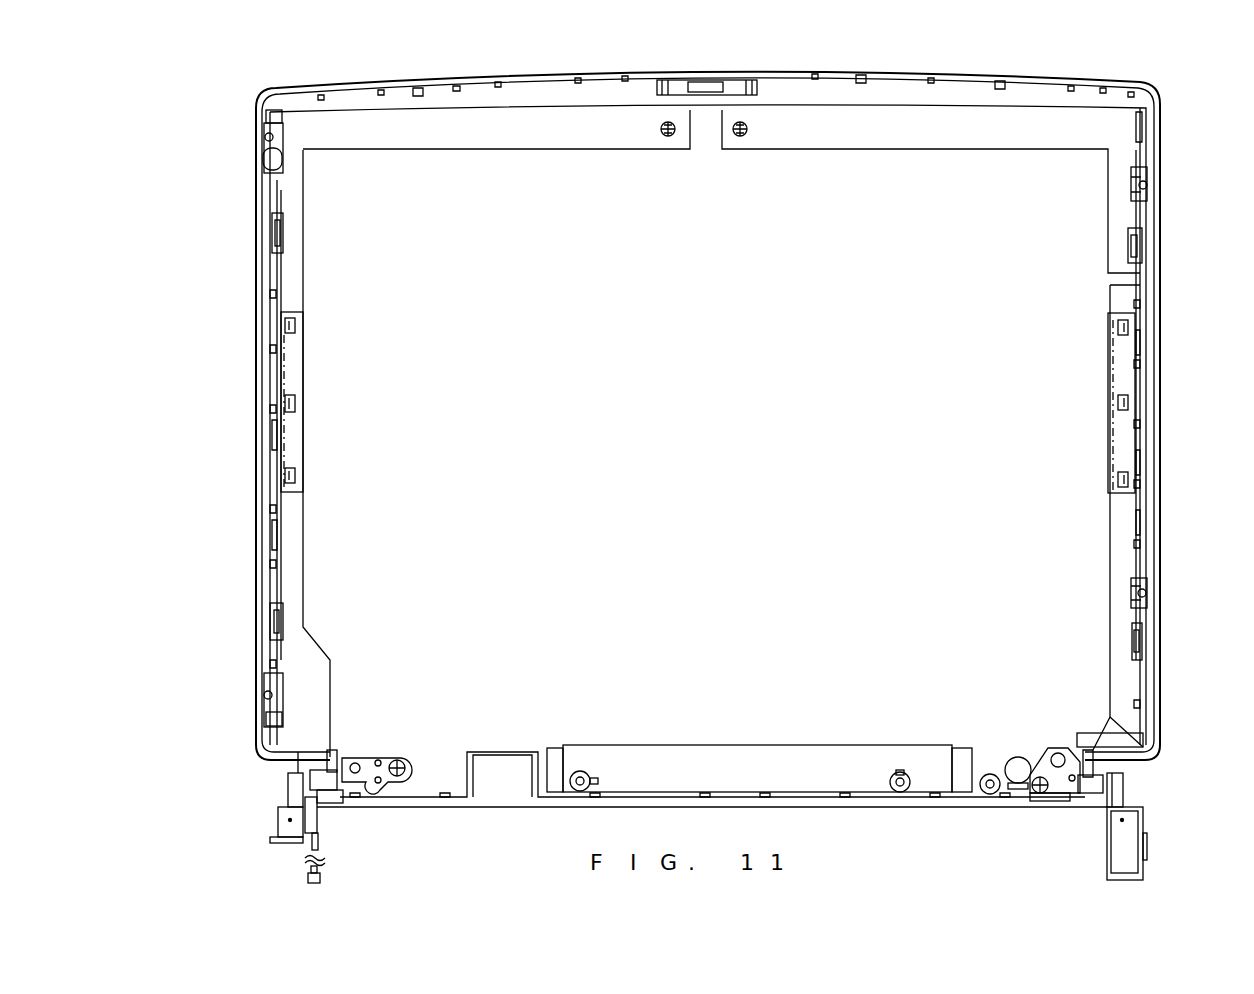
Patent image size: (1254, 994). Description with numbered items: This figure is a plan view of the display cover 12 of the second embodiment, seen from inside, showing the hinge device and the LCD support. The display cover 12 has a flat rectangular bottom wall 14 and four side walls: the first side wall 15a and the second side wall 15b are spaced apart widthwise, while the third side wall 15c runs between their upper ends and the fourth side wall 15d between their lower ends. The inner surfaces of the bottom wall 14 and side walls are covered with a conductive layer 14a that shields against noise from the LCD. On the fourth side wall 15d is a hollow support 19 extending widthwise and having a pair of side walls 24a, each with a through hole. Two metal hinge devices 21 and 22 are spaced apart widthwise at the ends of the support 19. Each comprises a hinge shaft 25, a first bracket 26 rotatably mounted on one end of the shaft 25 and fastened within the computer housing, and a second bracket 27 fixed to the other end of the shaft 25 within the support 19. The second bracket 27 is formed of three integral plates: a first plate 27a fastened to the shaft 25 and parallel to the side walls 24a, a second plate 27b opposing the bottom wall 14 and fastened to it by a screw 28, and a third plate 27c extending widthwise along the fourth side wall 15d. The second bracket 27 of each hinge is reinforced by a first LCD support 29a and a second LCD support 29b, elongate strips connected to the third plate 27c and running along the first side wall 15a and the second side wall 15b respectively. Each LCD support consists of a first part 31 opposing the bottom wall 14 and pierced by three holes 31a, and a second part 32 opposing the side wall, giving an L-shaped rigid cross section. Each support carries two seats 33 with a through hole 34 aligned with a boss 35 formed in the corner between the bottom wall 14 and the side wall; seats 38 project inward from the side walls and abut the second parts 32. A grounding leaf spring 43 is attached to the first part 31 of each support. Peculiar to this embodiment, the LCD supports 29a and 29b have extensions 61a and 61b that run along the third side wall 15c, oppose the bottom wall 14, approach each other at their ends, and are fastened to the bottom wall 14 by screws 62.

The display cover 12 is at (258, 368).
The bottom wall 14 is at (480, 172).
The conductive layer 14a is at (772, 233).
The first side wall 15a is at (258, 488).
The second side wall 15b is at (1160, 448).
The third side wall 15c is at (617, 80).
The fourth side wall 15d is at (290, 762).
The hollow support 19 is at (895, 797).
The first hinge device 21 is at (327, 817).
The second hinge device 22 is at (1097, 812).
The side wall of support 24a is at (290, 800).
The hinge shaft 25 is at (318, 782).
The first bracket 26 is at (290, 812).
The second bracket 27 is at (386, 770).
The first plate 27a is at (345, 790).
The second plate 27b is at (365, 762).
The third plate 27c is at (298, 750).
The screw 28 is at (405, 768).
The first LCD support 29a is at (300, 540).
The second LCD support 29b is at (1115, 540).
The first part 31 is at (296, 432).
The hole 31a is at (297, 325).
The second part 32 is at (283, 372).
The seat 33 is at (283, 155).
The through hole 34 is at (275, 132).
The boss 35 is at (1138, 180).
The seat 38 is at (262, 240).
The grounding leaf spring 43 is at (313, 455).
The extension 61a is at (567, 140).
The extension 61b is at (888, 140).
The screw 62 is at (722, 149).